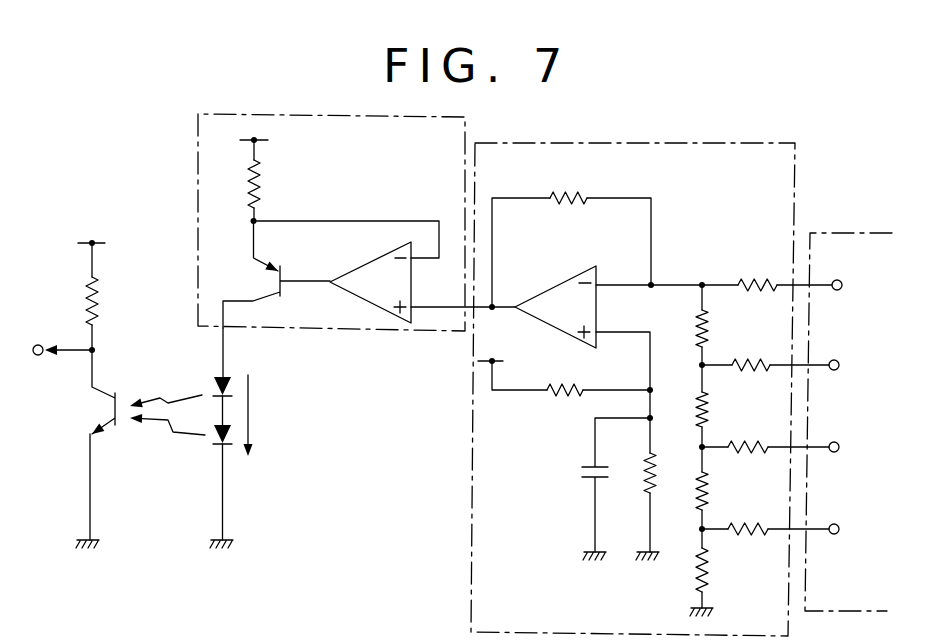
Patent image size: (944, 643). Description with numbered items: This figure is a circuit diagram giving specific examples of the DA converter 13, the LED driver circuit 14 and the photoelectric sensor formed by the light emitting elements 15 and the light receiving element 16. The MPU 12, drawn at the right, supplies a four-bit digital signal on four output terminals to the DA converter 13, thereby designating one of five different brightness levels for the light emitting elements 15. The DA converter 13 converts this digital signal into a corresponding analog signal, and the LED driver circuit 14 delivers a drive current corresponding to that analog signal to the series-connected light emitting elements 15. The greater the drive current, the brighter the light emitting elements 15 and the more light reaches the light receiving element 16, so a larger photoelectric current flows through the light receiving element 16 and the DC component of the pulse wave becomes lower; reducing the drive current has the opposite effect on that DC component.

The MPU 12 is at (828, 233).
The DA converter 13 is at (617, 145).
The LED driver circuit 14 is at (310, 114).
The light emitting elements 15 is at (214, 378).
The light receiving element 16 is at (97, 413).